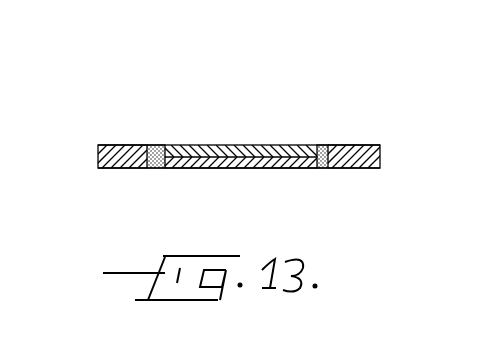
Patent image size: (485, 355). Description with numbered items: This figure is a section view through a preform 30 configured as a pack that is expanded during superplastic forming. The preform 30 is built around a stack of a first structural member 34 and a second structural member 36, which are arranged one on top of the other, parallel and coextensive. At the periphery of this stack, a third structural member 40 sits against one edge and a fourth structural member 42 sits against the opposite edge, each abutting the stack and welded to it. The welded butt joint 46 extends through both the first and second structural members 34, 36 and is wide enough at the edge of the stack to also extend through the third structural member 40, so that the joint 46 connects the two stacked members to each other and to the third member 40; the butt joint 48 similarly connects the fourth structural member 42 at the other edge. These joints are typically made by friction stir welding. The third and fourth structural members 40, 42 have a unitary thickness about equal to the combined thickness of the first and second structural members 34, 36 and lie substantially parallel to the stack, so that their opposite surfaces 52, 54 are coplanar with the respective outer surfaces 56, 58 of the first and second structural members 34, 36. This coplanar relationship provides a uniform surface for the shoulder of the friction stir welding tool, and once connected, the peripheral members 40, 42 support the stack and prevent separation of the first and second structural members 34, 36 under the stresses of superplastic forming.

The preform 30 is at (147, 95).
The first structural member 34 is at (220, 145).
The second structural member 36 is at (225, 168).
The third structural member 40 is at (106, 151).
The fourth structural member 42 is at (371, 161).
The welded butt joint 46 is at (158, 145).
The butt joint 48 is at (328, 145).
The opposite surface 52 is at (124, 143).
The opposite surface 54 is at (125, 170).
The outer surface 56 is at (279, 143).
The outer surface 58 is at (258, 170).